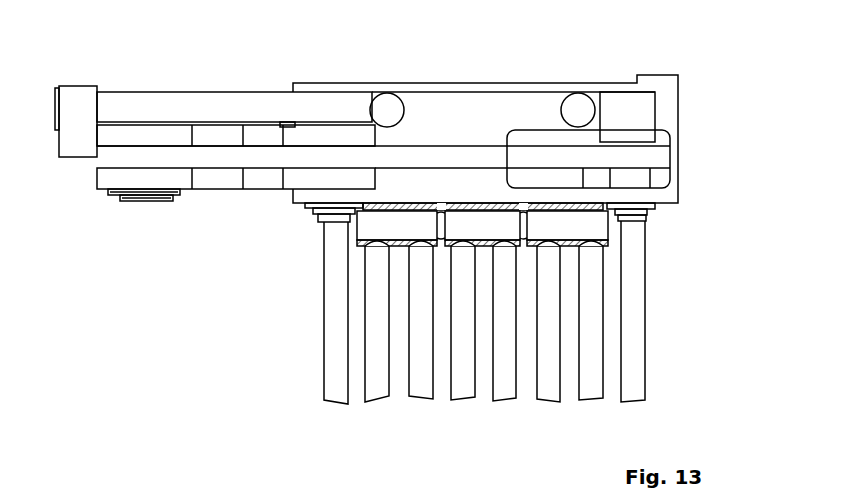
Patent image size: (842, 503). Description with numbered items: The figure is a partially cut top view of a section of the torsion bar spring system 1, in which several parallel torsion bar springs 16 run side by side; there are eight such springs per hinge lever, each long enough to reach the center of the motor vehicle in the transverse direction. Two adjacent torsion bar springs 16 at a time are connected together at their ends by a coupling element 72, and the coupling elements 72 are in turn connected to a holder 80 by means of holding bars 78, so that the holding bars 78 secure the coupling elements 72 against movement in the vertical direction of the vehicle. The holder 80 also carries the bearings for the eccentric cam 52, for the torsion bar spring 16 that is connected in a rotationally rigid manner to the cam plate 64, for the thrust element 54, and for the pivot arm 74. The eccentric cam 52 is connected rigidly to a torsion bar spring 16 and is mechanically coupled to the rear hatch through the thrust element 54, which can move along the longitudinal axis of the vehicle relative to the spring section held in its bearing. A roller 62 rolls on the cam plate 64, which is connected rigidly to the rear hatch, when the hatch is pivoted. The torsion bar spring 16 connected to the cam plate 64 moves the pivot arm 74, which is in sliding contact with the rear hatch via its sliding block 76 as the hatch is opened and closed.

The torsion bar spring system 1 is at (407, 206).
The torsion bar spring 16 is at (332, 325).
The eccentric cam 52 is at (640, 112).
The thrust element 54 is at (651, 153).
The roller 62 is at (150, 180).
The cam plate 64 is at (222, 138).
The coupling element 72 is at (498, 225).
The pivot arm 74 is at (177, 103).
The sliding block 76 is at (78, 148).
The holding bar 78 is at (399, 204).
The holder 80 is at (435, 190).